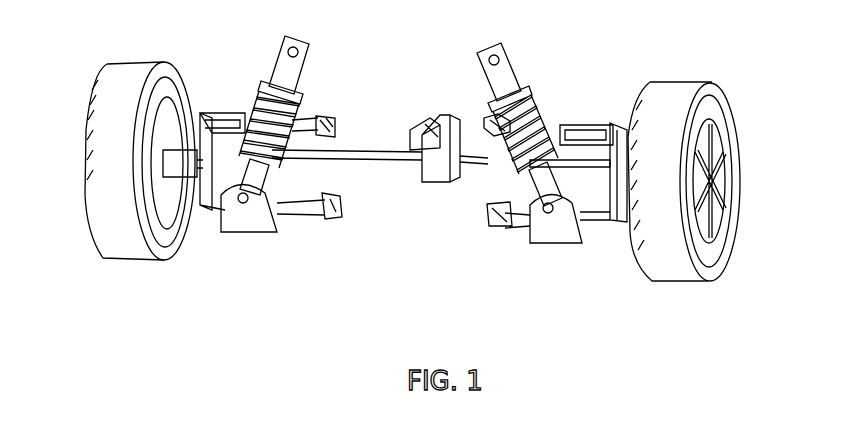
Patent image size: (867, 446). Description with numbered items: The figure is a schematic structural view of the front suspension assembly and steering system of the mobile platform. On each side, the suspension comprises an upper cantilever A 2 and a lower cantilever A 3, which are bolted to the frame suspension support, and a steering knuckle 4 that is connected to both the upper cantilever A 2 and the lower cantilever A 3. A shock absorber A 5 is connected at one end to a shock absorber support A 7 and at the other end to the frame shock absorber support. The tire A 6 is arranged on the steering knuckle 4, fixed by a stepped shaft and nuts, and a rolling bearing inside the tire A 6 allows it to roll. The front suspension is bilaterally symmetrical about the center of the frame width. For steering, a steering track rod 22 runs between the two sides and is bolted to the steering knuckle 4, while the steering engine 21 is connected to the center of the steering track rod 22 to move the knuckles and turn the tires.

The steering track rod 22 is at (410, 150).
The steering engine 21 is at (444, 112).
The shock absorber A 5 is at (520, 72).
The upper cantilever A 2 is at (562, 125).
The steering knuckle 4 is at (620, 128).
The lower cantilever A 3 is at (510, 228).
The shock absorber support A 7 is at (555, 226).
The tire A 6 is at (655, 220).